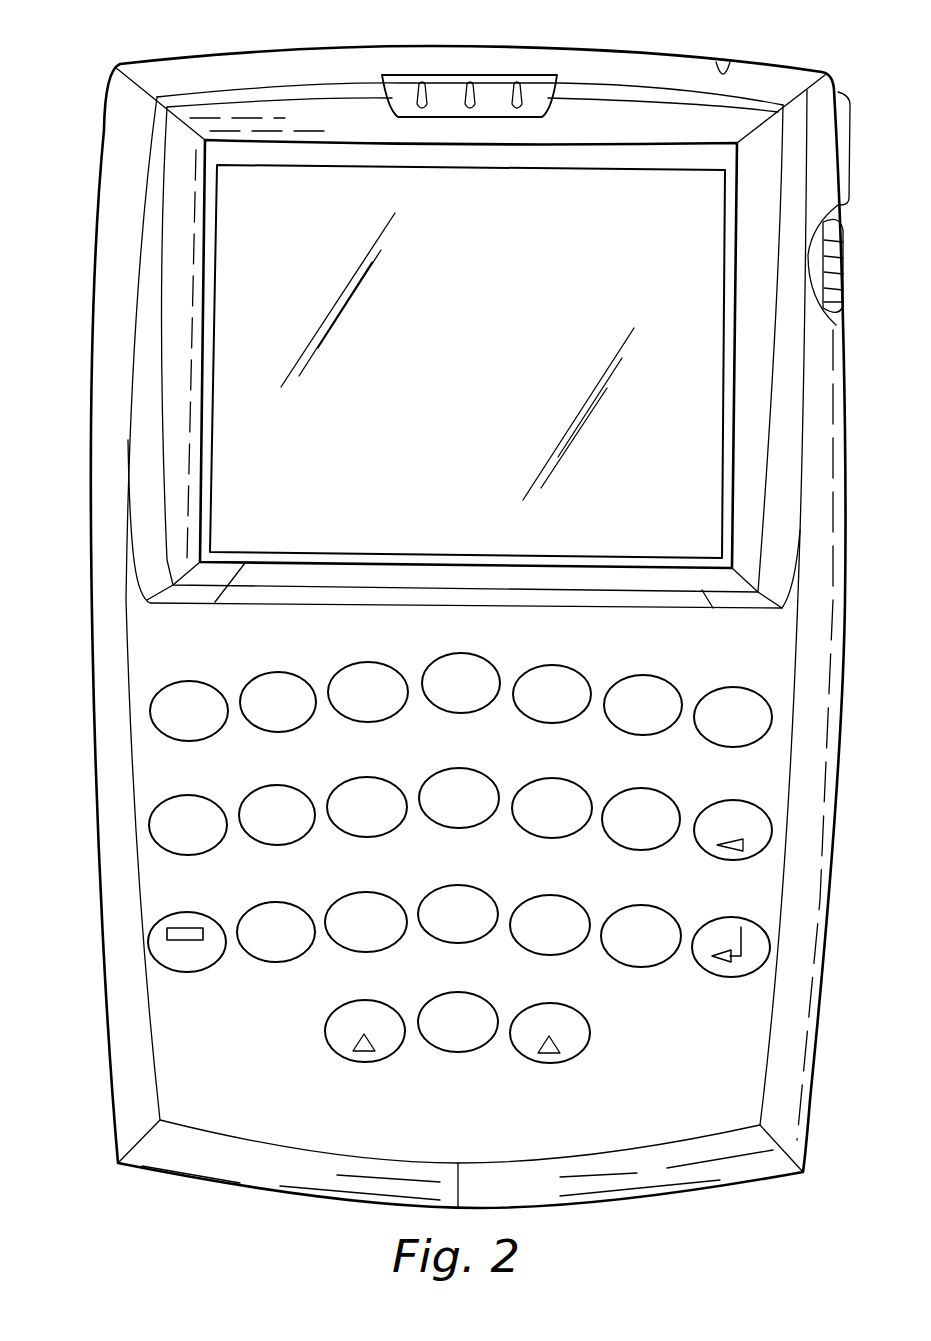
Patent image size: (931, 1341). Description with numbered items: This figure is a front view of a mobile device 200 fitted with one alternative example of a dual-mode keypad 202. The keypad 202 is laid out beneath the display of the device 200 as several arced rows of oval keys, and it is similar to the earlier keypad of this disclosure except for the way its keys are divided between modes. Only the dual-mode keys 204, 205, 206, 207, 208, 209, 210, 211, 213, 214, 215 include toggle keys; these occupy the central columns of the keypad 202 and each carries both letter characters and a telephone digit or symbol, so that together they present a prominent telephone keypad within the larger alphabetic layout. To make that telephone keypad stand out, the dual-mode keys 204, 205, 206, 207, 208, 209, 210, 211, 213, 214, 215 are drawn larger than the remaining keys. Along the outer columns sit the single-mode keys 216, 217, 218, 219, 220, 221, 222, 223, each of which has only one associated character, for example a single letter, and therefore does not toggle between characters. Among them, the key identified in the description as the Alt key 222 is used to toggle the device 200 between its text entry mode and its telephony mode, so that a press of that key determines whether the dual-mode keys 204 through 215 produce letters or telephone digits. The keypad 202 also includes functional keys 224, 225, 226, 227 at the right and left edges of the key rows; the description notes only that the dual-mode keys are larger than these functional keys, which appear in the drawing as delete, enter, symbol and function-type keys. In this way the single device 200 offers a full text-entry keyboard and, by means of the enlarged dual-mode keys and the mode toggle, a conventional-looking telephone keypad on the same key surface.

The mobile device 200 is at (93, 98).
The dual-mode keypad 202 is at (174, 651).
The dual-mode key 204 is at (375, 722).
The dual-mode key 205 is at (473, 713).
The dual-mode key 206 is at (543, 723).
The dual-mode key 207 is at (370, 837).
The dual-mode key 208 is at (470, 828).
The dual-mode key 209 is at (545, 838).
The dual-mode key 210 is at (370, 952).
The dual-mode key 211 is at (465, 943).
The dual-mode key 213 is at (452, 1053).
The dual-mode key 214 is at (330, 1047).
The dual-mode key 215 is at (583, 1052).
The single-mode key 216 is at (198, 742).
The single-mode key 217 is at (288, 732).
The single-mode key 218 is at (628, 735).
The single-mode key 219 is at (722, 747).
The single-mode key 220 is at (198, 855).
The single-mode key 221 is at (288, 845).
The Alt key 222 is at (628, 850).
The single-mode key 223 is at (288, 962).
The delete key 224 is at (720, 860).
The enter key 225 is at (720, 977).
The symbol key 226 is at (628, 967).
The function key 227 is at (195, 972).